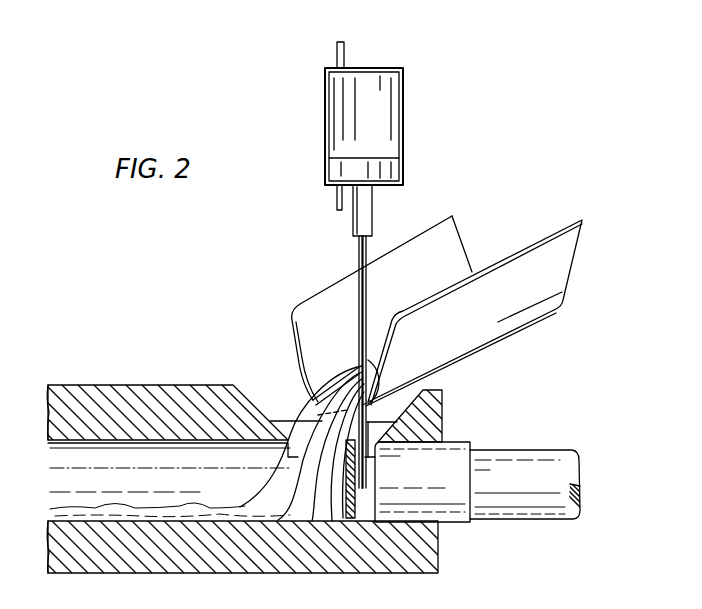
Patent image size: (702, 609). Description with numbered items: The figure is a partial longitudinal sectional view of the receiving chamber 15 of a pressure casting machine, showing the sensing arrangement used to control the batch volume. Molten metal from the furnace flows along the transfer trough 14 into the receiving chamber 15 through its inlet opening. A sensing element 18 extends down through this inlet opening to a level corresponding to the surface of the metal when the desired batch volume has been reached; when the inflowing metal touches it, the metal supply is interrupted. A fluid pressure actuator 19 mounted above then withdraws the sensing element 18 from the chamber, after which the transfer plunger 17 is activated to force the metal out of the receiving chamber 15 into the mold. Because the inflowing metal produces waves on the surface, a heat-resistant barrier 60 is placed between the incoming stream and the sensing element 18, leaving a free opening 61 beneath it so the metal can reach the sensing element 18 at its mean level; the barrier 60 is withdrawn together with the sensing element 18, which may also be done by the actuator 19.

The transfer trough 14 is at (335, 303).
The receiving chamber 15 is at (108, 410).
The transfer plunger 17 is at (525, 480).
The sensing element 18 is at (360, 352).
The fluid pressure actuator 19 is at (368, 128).
The heat-resistant barrier 60 is at (340, 457).
The free opening 61 is at (351, 521).